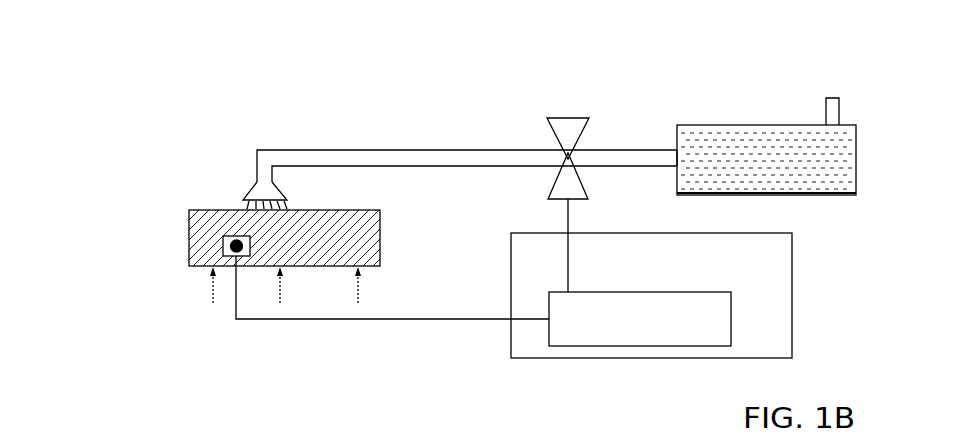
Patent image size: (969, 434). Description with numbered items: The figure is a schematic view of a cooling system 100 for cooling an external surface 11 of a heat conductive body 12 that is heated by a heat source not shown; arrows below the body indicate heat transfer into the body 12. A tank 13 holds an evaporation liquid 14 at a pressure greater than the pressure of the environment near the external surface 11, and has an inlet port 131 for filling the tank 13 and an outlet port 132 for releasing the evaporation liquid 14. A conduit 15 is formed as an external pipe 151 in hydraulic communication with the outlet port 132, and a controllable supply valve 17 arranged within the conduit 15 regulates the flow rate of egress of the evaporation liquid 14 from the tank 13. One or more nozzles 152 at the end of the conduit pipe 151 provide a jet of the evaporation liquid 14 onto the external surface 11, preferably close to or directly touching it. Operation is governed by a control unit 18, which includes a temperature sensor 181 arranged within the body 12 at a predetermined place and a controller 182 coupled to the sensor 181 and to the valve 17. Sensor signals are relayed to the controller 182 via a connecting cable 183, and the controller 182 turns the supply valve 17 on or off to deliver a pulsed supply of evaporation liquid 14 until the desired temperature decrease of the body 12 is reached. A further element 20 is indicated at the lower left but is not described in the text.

The cooling system 100 is at (235, 82).
The external surface 11 is at (350, 210).
The heat conductive body 12 is at (189, 234).
The tank 13 is at (762, 125).
The inlet port 131 is at (833, 98).
The outlet port 132 is at (677, 157).
The evaporation liquid 14 is at (730, 152).
The conduit 15 is at (380, 137).
The external pipe 151 is at (467, 149).
The nozzle 152 is at (245, 203).
The controllable supply valve 17 is at (568, 118).
The control unit 18 is at (792, 306).
The temperature sensor 181 is at (226, 249).
The controller 182 is at (595, 346).
The connecting cable 183 is at (385, 320).
The lower apparatus 20 is at (222, 433).